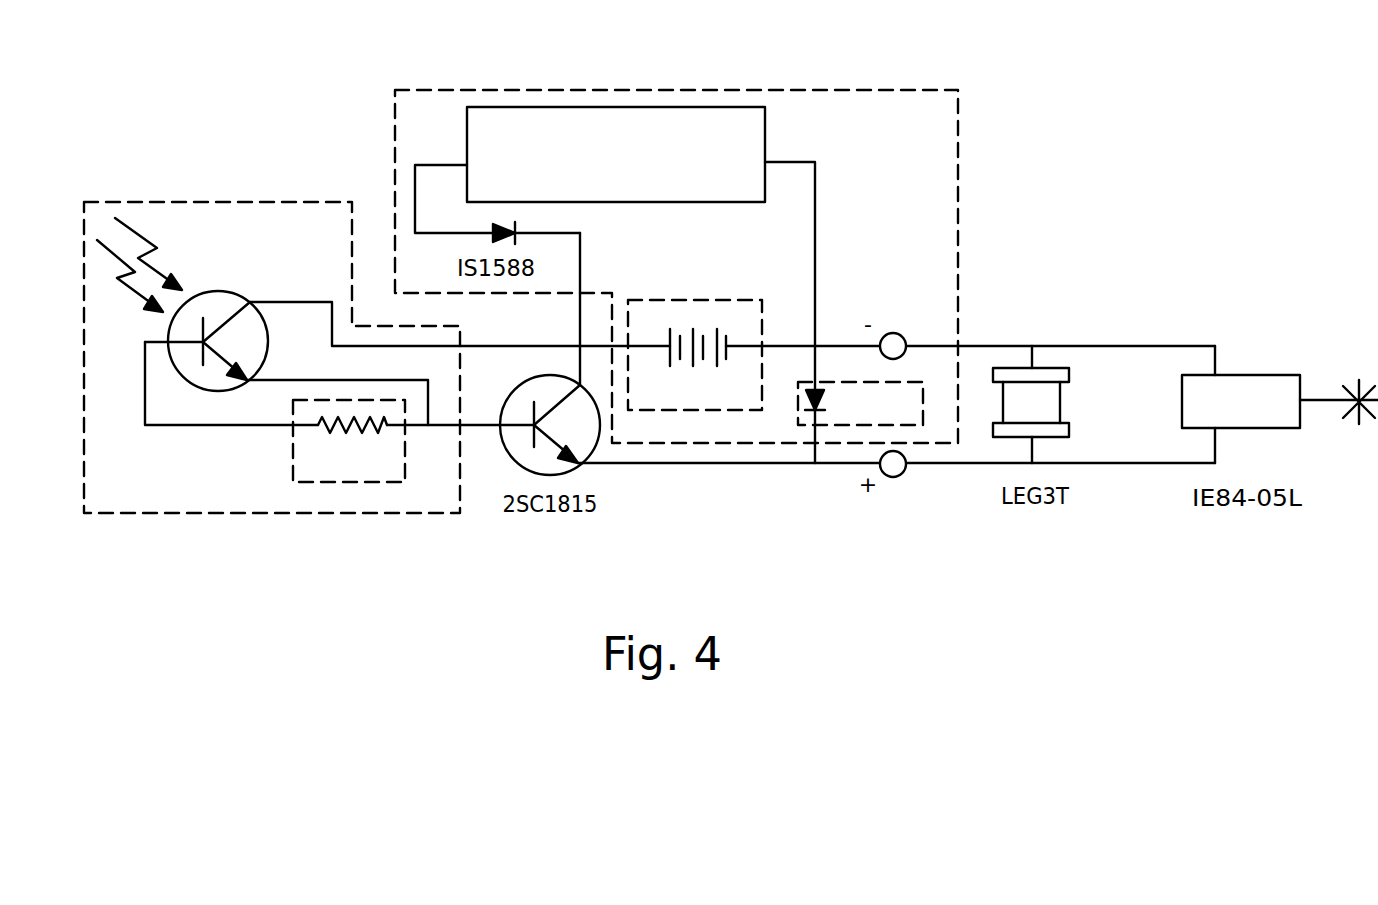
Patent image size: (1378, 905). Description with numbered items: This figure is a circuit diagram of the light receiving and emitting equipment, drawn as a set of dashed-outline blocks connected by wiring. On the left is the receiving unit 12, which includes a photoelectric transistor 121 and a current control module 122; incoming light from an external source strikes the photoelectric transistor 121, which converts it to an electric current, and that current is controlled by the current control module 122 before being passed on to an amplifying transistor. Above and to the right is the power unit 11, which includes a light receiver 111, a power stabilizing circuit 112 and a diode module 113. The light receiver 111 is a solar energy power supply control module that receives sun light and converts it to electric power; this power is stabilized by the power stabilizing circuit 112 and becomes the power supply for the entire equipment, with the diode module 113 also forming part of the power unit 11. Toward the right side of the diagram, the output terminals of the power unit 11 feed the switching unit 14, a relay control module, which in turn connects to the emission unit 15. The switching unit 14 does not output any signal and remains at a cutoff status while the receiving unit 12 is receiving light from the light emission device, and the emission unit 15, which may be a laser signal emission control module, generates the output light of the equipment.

The power unit 11 is at (842, 89).
The light receiver 111 is at (693, 300).
The power stabilizing circuit 112 is at (648, 106).
The diode module 113 is at (840, 425).
The receiving unit 12 is at (203, 202).
The photoelectric transistor 121 is at (173, 367).
The current control module 122 is at (353, 483).
The switching unit 14 is at (1052, 398).
The emission unit 15 is at (1243, 382).